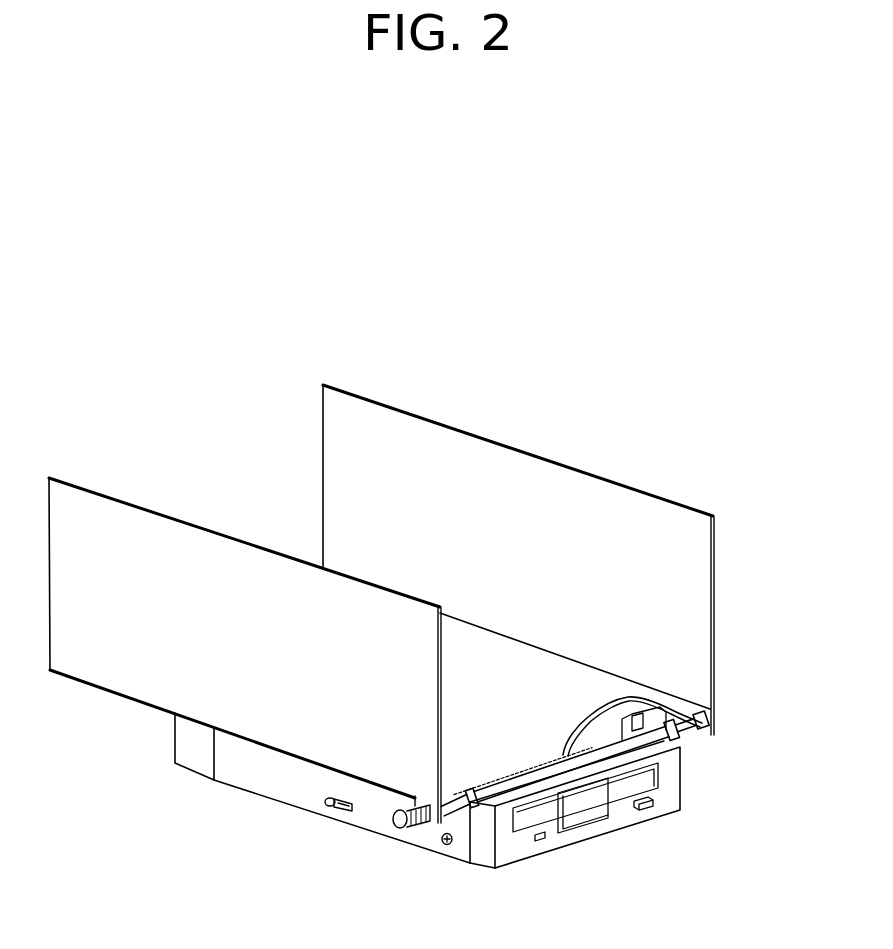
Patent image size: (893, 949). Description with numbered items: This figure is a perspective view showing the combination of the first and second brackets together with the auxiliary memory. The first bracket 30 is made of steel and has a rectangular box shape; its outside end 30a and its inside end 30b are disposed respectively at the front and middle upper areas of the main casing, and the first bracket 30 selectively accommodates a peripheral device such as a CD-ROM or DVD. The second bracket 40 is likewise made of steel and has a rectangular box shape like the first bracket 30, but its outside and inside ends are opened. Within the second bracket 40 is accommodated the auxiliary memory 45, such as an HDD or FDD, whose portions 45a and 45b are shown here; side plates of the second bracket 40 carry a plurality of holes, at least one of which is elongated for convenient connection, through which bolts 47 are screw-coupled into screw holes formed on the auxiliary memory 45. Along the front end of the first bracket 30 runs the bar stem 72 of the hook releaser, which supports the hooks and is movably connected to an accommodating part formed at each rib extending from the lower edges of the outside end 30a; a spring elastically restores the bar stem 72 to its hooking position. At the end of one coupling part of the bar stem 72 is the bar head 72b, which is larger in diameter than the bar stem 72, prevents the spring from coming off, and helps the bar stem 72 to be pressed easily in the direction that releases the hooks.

The first bracket 30 is at (429, 604).
The outside end 30a is at (717, 560).
The inside end 30b is at (323, 423).
The second bracket 40 is at (267, 800).
The auxiliary memory 45 is at (377, 817).
The right support bracket 45a is at (522, 855).
The left support block 45b is at (175, 733).
The bolts 47 is at (328, 807).
The bar stem 72 is at (597, 757).
The bar head 72b is at (393, 827).